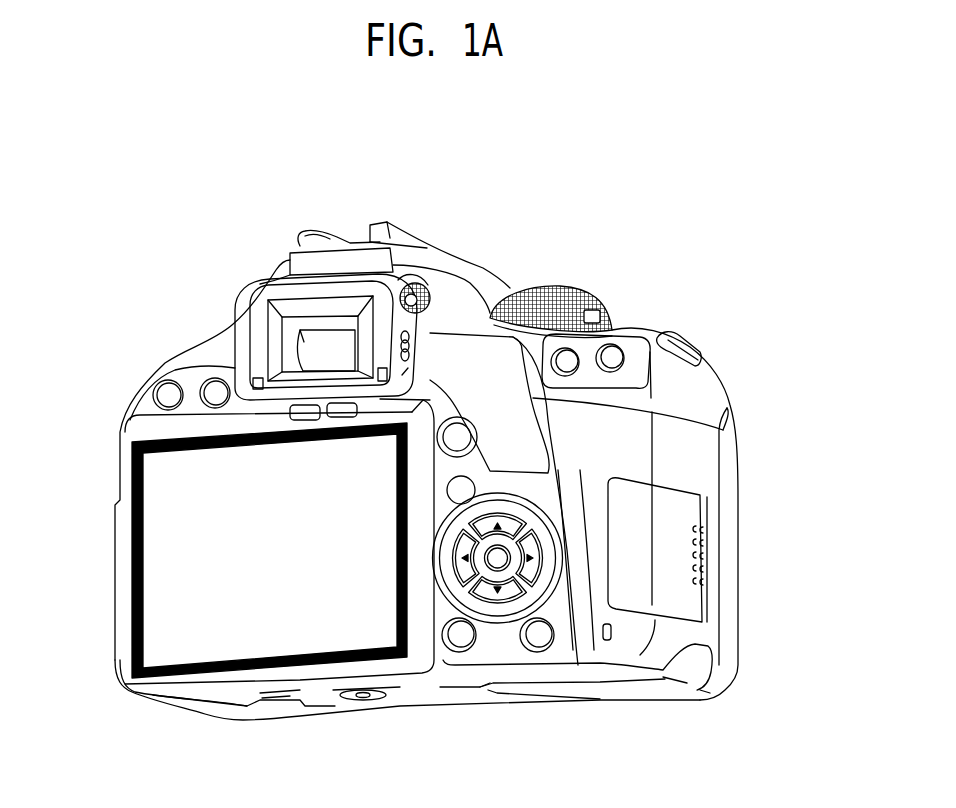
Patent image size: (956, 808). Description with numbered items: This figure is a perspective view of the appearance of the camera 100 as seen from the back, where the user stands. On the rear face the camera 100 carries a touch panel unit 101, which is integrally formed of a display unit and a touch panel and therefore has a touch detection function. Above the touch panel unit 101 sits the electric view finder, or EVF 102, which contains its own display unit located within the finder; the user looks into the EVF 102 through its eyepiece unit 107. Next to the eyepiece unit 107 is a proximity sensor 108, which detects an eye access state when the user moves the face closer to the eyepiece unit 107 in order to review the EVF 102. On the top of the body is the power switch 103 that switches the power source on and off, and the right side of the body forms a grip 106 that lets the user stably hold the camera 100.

The camera 100 is at (443, 229).
The touch panel unit 101 is at (245, 543).
The electric view finder (EVF) 102 is at (330, 353).
The power switch 103 is at (612, 317).
The grip 106 is at (740, 512).
The eyepiece unit 107 is at (405, 330).
The proximity sensor 108 is at (303, 418).